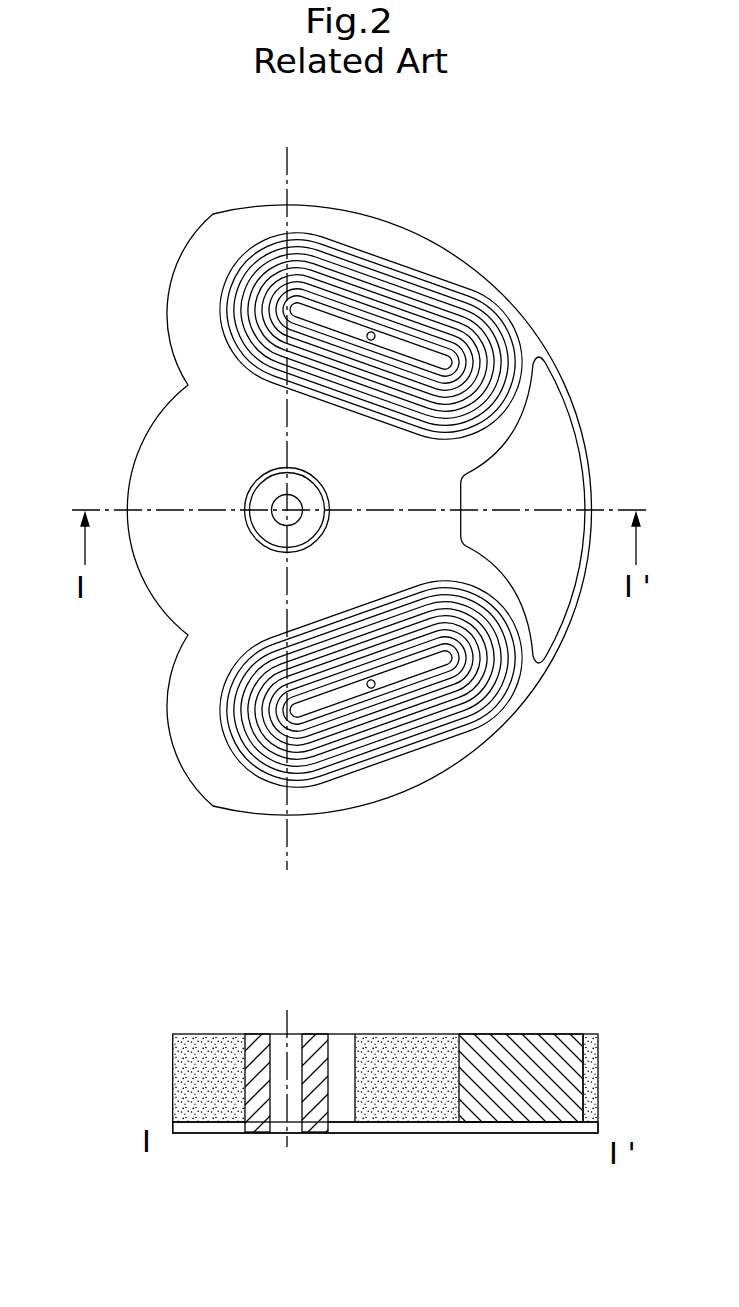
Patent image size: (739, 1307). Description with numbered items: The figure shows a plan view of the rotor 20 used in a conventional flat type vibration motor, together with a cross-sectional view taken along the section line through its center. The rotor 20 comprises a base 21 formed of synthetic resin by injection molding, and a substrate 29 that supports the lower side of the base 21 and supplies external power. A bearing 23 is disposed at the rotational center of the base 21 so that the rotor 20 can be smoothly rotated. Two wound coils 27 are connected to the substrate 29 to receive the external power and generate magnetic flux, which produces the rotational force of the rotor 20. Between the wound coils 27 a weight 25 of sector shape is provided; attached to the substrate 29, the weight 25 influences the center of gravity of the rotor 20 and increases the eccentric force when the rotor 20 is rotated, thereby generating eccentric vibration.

The rotor 20 is at (147, 200).
The base 21 is at (208, 371).
The bearing 23 is at (267, 525).
The weight 25 is at (550, 577).
The wound coil 27 is at (470, 310).
The substrate 29 is at (203, 1130).